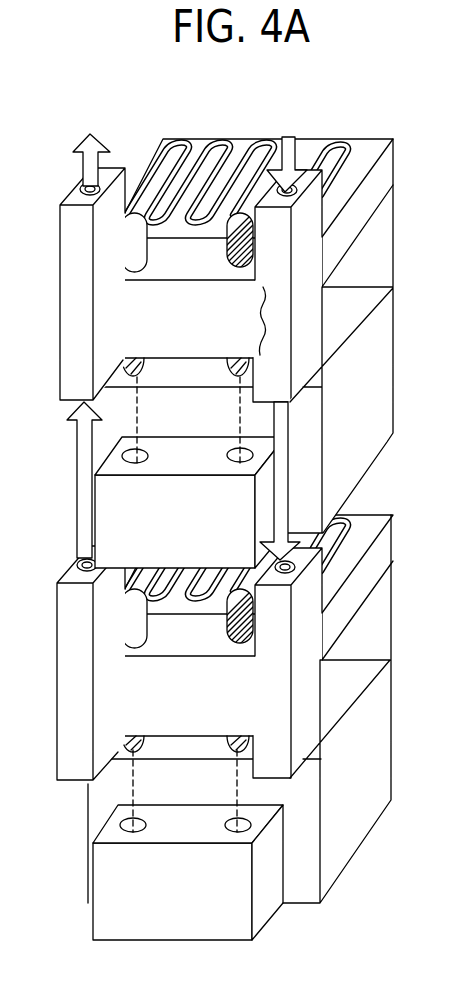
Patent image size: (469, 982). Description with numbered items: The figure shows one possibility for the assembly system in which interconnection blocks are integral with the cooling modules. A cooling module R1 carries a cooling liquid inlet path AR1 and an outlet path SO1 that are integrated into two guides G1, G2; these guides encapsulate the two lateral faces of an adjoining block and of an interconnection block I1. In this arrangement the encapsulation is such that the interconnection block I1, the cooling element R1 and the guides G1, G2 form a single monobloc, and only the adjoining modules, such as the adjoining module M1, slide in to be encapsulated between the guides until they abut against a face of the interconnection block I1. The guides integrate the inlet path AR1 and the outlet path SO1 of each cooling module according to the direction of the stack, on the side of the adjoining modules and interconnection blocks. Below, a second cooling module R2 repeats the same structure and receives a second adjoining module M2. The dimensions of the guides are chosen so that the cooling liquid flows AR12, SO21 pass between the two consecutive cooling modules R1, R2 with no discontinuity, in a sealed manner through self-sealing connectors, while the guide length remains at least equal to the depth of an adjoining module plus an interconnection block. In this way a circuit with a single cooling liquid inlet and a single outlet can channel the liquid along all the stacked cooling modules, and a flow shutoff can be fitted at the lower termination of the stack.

The cooling liquid outlet path SO1 is at (83, 142).
The cooling liquid inlet path AR1 is at (298, 141).
The cooling module R1 is at (362, 237).
The interconnection block I1 is at (263, 287).
The guide G1 is at (58, 317).
The guide G2 is at (290, 341).
The adjoining module M1 is at (374, 436).
The cooling liquid flow AR12 is at (289, 496).
The cooling liquid flow SO21 is at (75, 495).
The cooling module R2 is at (364, 601).
The adjoining module M2 is at (357, 813).